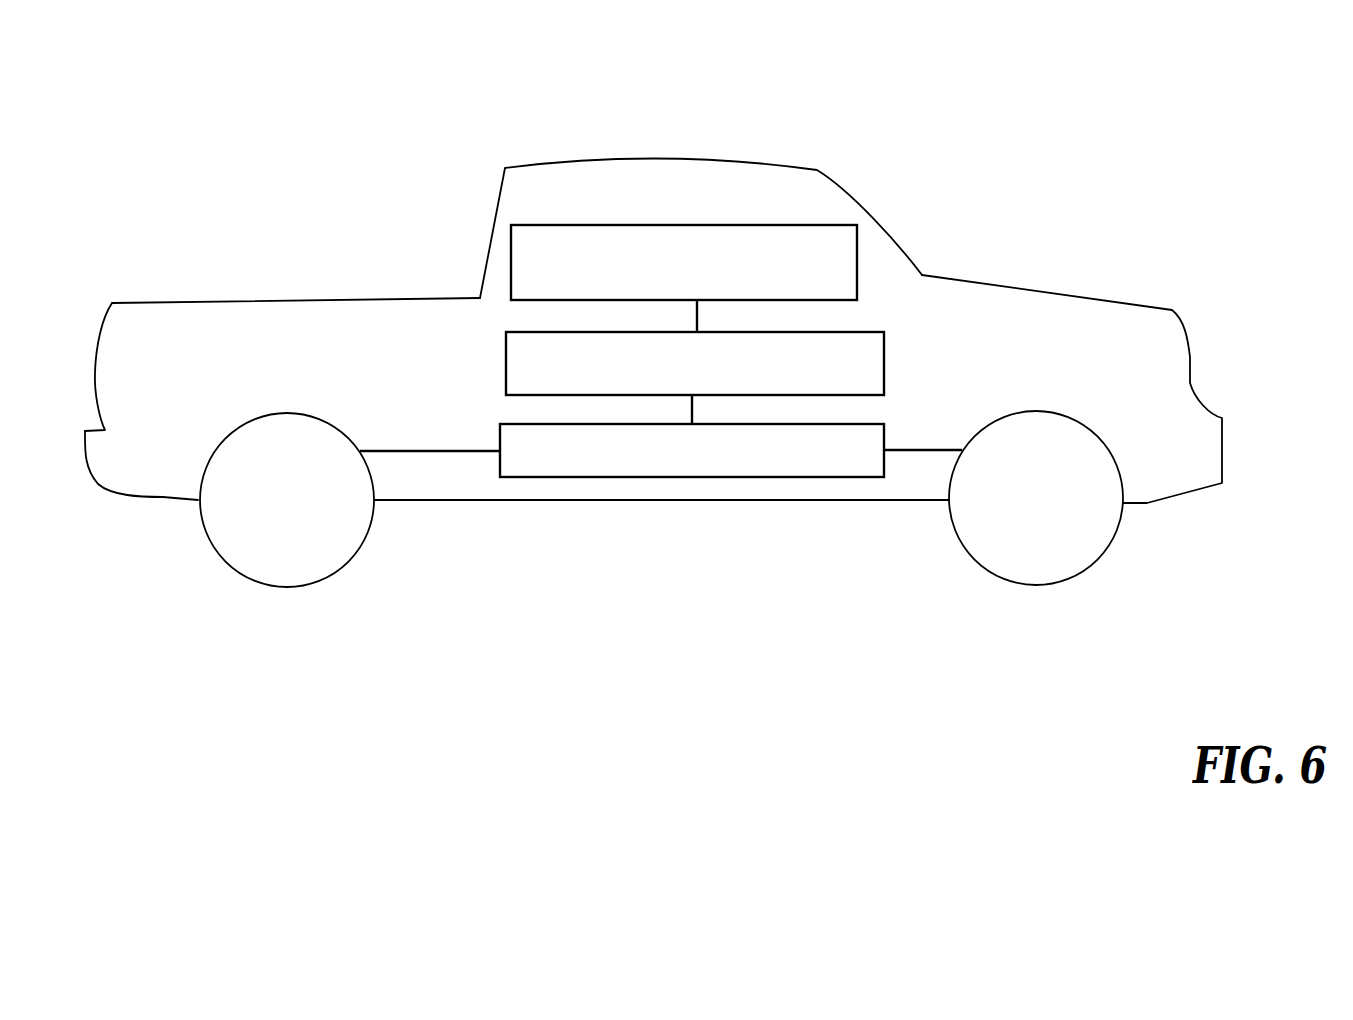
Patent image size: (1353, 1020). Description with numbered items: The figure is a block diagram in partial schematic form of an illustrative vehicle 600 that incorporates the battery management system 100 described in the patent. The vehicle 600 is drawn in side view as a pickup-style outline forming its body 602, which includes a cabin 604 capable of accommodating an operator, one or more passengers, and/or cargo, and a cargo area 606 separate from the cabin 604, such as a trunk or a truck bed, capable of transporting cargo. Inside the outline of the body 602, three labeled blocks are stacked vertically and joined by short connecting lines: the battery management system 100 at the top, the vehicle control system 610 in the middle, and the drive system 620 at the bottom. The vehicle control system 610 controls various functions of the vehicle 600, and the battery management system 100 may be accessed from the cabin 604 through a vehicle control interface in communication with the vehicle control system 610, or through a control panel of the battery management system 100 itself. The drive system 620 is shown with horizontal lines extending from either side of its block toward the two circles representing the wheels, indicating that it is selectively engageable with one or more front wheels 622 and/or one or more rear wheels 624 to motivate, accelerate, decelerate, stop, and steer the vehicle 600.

The vehicle 600 is at (194, 128).
The body 602 is at (1070, 292).
The cabin 604 is at (537, 182).
The cargo area 606 is at (156, 308).
The battery management system 100 is at (848, 292).
The vehicle control system 610 is at (868, 391).
The drive system 620 is at (869, 471).
The front wheels 622 is at (953, 527).
The rear wheels 624 is at (370, 525).